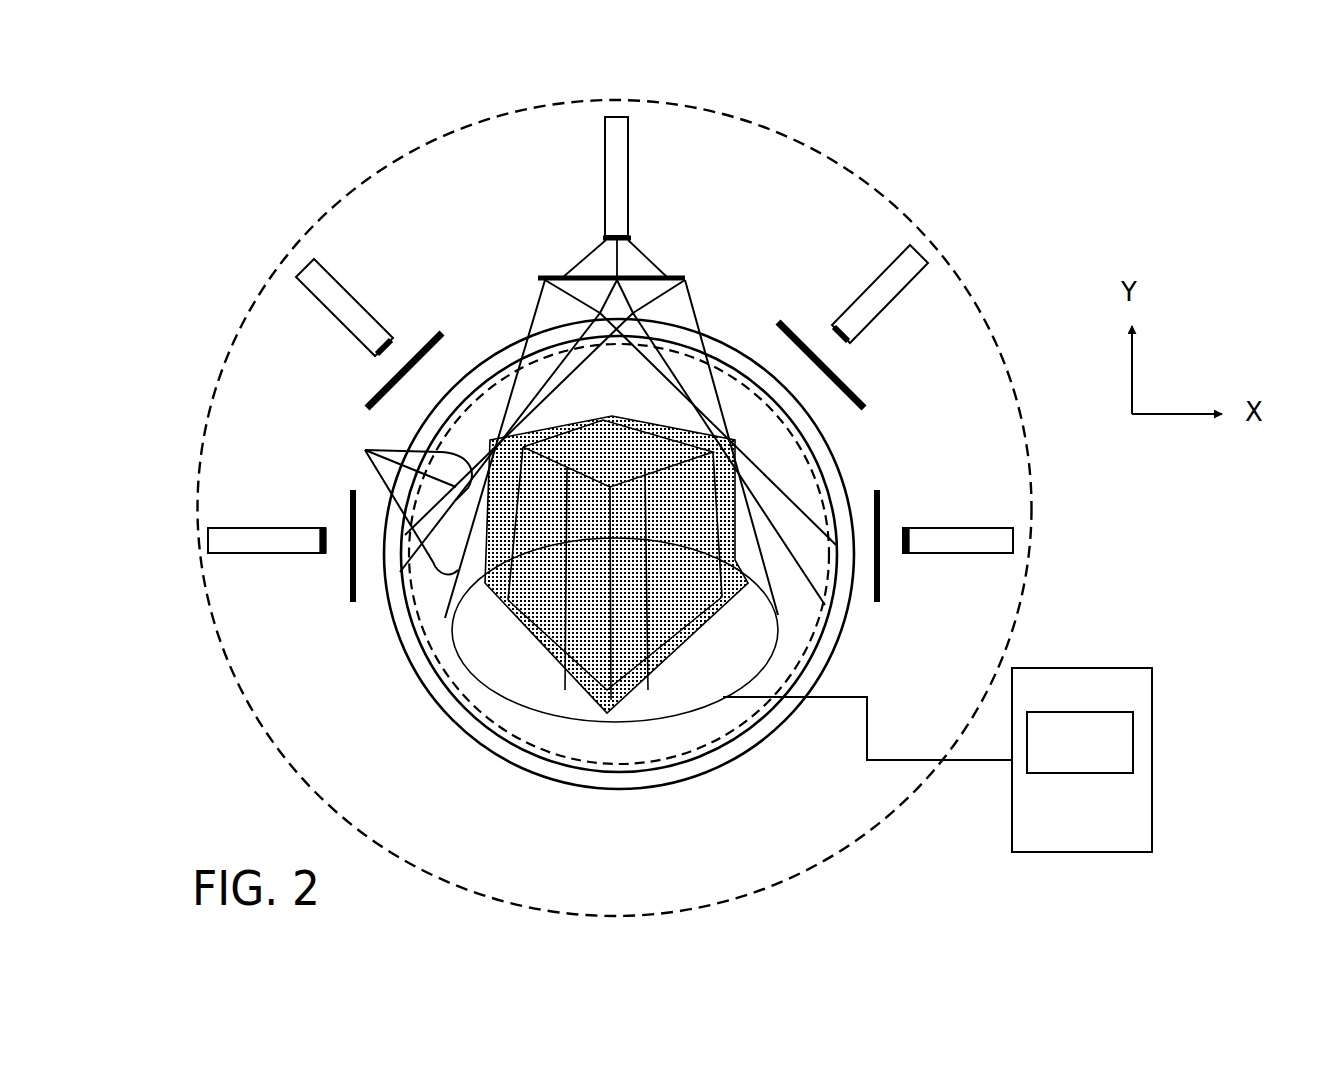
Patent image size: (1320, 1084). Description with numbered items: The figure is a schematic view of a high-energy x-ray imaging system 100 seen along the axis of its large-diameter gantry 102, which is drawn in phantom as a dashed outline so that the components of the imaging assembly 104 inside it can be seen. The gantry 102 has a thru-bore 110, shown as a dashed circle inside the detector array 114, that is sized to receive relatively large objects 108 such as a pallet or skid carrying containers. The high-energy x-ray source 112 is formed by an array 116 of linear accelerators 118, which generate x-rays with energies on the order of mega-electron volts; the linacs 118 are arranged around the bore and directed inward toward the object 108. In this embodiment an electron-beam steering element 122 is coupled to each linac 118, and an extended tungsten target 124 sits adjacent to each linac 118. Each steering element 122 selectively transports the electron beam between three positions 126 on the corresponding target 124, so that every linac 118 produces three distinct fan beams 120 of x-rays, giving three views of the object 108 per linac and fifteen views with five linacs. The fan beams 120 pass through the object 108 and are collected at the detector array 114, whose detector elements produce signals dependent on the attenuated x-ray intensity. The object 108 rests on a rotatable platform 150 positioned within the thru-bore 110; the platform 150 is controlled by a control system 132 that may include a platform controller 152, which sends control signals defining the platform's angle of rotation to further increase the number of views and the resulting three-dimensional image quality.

The high-energy x-ray imaging system 100 is at (929, 126).
The large-diameter gantry 102 is at (310, 222).
The imaging assembly 104 is at (960, 344).
The object 108 is at (538, 612).
The thru-bore 110 is at (625, 742).
The high-energy x-ray source 112 is at (404, 280).
The detector array 114 is at (743, 753).
The array of linear accelerators 116 is at (267, 580).
The linear accelerator 118 is at (628, 218).
The fan beam 120 is at (365, 450).
The electron-beam steering element 122 is at (833, 334).
The extended tungsten target 124 is at (853, 396).
The positions 126 is at (676, 271).
The control system 132 is at (952, 720).
The rotatable platform 150 is at (507, 673).
The platform controller 152 is at (1055, 758).